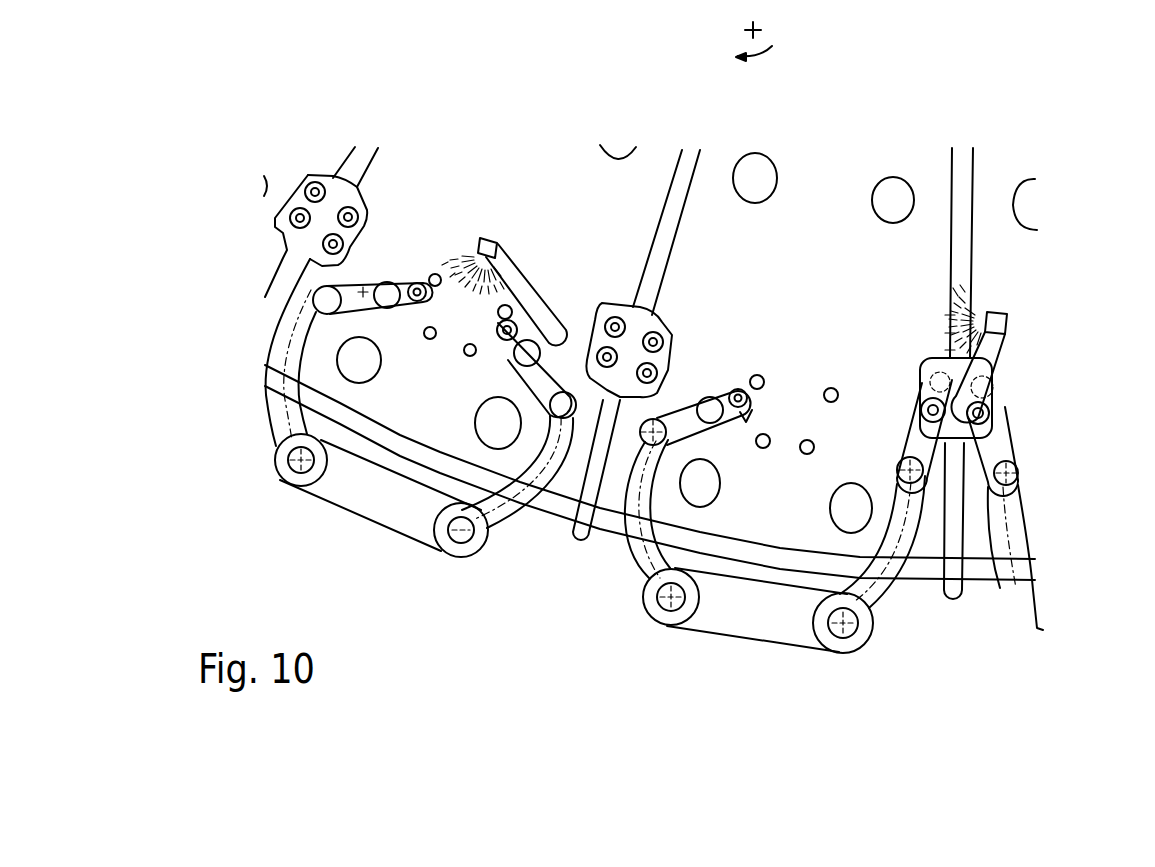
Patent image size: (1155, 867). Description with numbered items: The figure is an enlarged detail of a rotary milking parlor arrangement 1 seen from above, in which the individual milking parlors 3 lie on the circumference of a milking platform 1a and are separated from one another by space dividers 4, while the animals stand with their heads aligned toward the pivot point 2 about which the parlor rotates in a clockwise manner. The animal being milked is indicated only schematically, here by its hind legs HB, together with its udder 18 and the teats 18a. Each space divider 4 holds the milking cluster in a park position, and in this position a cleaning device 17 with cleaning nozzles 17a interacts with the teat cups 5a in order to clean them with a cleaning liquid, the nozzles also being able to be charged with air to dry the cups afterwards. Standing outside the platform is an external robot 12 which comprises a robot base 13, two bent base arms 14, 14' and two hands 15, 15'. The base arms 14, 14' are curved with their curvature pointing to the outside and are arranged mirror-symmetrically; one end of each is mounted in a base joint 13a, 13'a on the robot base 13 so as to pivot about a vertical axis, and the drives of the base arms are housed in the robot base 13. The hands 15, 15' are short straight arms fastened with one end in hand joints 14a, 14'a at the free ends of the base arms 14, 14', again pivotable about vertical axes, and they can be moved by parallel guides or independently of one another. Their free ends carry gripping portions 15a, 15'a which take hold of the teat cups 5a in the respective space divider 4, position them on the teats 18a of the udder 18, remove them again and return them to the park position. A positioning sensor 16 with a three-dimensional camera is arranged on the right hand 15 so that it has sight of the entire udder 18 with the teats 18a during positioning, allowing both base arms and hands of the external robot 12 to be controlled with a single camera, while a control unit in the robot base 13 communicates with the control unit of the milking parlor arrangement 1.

The milking parlor arrangement 1 is at (1103, 98).
The milking platform 1a is at (980, 570).
The pivot point 2 is at (733, 30).
The milking parlor 3 is at (525, 155).
The space divider 4 is at (355, 162).
The teat cup 5a is at (417, 284).
The external robot 12 is at (337, 538).
The robot base 13 is at (563, 568).
The base joint 13a is at (846, 630).
The base joint 13'a is at (648, 618).
The base arm 14 is at (690, 539).
The base arm 14' is at (414, 529).
The hand joint 14a is at (920, 472).
The hand joint 14'a is at (650, 357).
The hand 15 is at (786, 370).
The hand 15' is at (532, 341).
The gripping portion 15a is at (503, 342).
The gripping portion 15'a is at (780, 385).
The positioning sensor 16 is at (492, 240).
The cleaning device 17 is at (316, 172).
The cleaning nozzles 17a is at (358, 212).
The udder 18 is at (802, 415).
The teats 18a is at (757, 375).
The hind legs HB is at (698, 488).